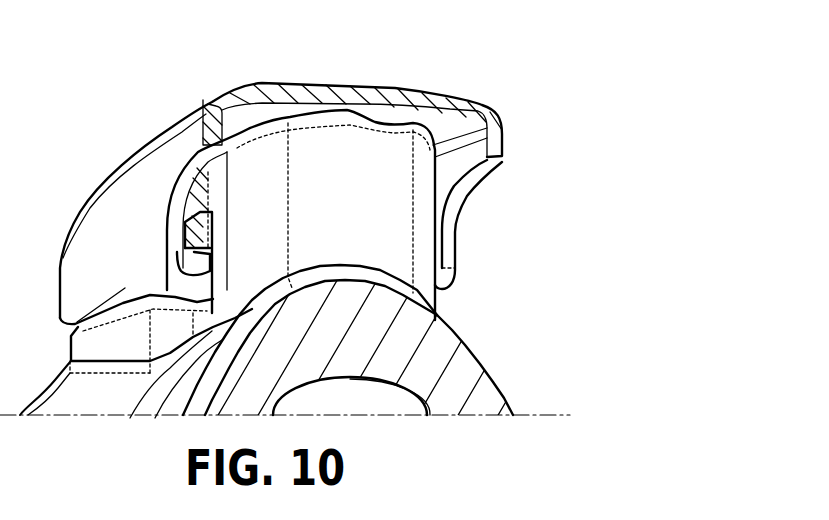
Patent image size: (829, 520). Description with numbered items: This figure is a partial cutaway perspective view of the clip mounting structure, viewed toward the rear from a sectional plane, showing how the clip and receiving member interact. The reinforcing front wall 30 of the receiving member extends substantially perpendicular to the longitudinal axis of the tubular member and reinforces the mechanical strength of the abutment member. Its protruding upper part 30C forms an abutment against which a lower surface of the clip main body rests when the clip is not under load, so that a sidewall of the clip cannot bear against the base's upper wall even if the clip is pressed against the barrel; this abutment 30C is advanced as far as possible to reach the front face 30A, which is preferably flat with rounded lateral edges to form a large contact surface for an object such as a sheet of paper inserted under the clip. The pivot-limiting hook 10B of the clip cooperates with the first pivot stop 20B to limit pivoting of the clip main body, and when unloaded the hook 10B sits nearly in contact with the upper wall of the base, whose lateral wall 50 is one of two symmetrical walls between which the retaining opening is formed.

The pivot-limiting hook 10B is at (192, 264).
The first pivot stop 20B is at (202, 228).
The reinforcing front wall 30 is at (383, 239).
The front face 30A is at (371, 208).
The protruding upper part 30C is at (348, 113).
The lateral wall 50 is at (125, 340).